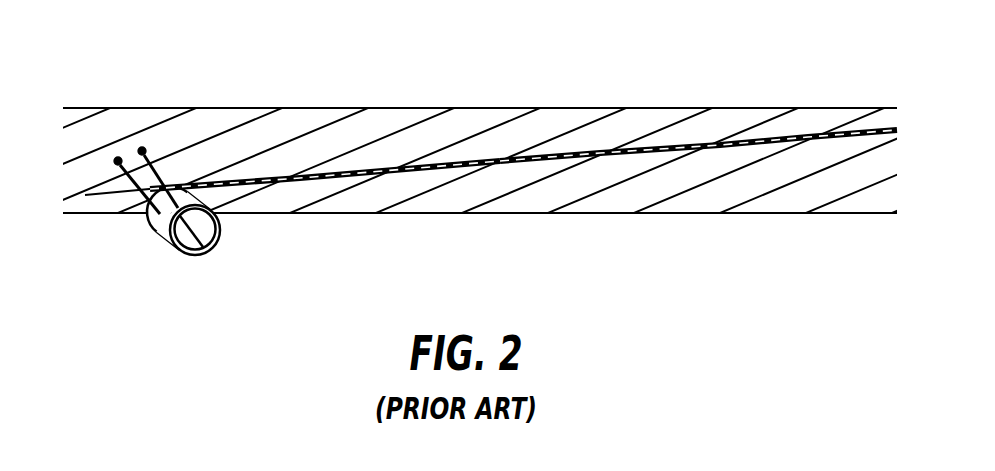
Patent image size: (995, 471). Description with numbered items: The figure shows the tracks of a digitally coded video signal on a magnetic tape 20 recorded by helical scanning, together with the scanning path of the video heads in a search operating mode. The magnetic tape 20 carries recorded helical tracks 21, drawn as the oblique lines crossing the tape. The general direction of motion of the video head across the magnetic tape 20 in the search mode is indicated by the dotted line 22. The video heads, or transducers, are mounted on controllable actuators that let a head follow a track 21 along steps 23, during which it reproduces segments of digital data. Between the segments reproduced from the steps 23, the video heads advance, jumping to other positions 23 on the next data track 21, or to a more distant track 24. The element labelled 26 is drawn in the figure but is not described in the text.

The magnetic tape 20 is at (733, 213).
The helical tracks 21 is at (610, 193).
The dotted line 22 is at (118, 197).
The steps 23 is at (440, 163).
The more distant track 24 is at (837, 132).
The needle/bobbin tool 26 is at (221, 232).